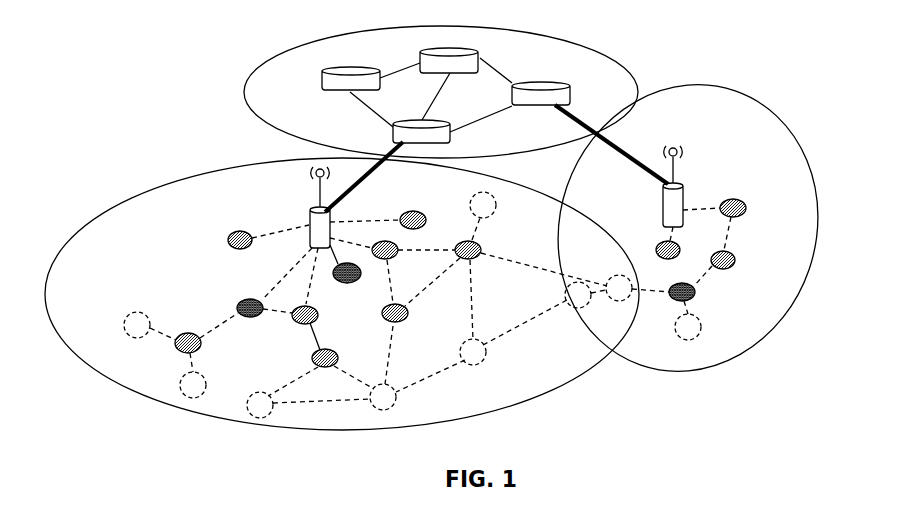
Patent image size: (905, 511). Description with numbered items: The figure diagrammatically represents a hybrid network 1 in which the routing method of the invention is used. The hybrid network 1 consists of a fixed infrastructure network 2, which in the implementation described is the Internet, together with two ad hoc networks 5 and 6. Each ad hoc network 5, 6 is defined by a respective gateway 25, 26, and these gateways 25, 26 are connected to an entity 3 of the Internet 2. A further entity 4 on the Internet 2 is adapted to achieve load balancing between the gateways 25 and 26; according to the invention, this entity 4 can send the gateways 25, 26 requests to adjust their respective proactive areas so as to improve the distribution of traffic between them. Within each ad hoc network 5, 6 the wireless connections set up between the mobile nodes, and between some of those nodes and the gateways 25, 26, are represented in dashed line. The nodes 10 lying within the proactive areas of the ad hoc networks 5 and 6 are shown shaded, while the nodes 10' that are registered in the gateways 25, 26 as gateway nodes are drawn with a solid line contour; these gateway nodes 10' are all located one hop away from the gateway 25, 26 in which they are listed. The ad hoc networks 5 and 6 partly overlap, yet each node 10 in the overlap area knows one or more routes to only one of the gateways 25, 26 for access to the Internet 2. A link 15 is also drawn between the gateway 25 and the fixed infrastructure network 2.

The hybrid network 1 is at (228, 142).
The fixed infrastructure network 2 is at (639, 92).
The entity of the Internet 3 is at (357, 67).
The entity 4 is at (463, 58).
The ad hoc network 5 is at (132, 393).
The ad hoc network 6 is at (752, 88).
The node 10 is at (410, 287).
The gateway node 10' is at (496, 243).
The wired connection 15 is at (380, 172).
The gateway 25 is at (309, 219).
The gateway 26 is at (663, 210).